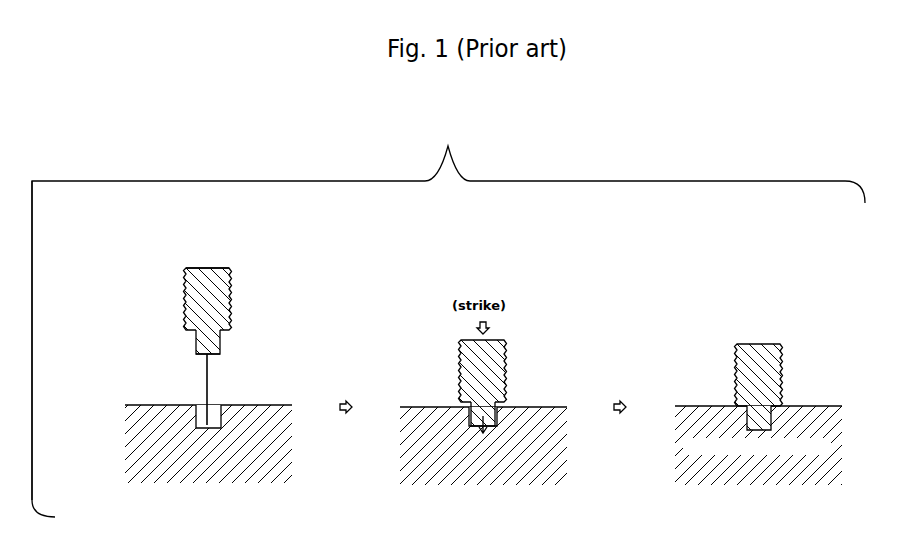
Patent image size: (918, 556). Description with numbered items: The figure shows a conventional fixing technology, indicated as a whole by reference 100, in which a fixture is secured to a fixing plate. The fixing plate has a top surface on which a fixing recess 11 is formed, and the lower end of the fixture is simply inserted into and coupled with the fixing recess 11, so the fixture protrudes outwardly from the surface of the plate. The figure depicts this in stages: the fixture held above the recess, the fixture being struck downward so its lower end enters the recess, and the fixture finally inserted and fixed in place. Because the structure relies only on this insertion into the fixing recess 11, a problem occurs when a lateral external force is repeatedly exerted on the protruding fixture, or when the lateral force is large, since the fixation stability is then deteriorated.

The prior art anchor installation 100 is at (110, 233).
The fixing recess 11 is at (221, 408).